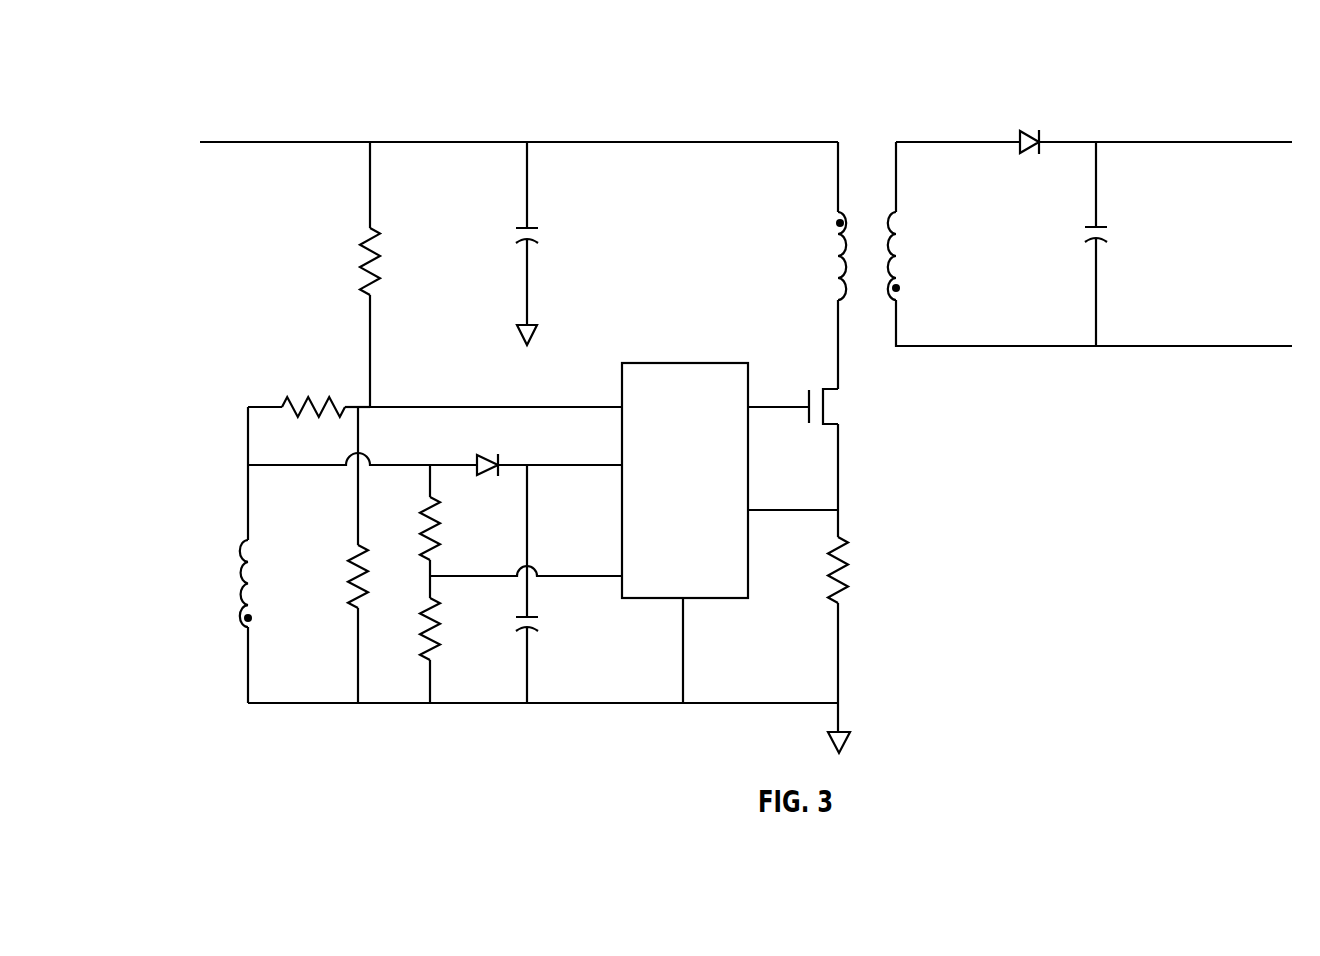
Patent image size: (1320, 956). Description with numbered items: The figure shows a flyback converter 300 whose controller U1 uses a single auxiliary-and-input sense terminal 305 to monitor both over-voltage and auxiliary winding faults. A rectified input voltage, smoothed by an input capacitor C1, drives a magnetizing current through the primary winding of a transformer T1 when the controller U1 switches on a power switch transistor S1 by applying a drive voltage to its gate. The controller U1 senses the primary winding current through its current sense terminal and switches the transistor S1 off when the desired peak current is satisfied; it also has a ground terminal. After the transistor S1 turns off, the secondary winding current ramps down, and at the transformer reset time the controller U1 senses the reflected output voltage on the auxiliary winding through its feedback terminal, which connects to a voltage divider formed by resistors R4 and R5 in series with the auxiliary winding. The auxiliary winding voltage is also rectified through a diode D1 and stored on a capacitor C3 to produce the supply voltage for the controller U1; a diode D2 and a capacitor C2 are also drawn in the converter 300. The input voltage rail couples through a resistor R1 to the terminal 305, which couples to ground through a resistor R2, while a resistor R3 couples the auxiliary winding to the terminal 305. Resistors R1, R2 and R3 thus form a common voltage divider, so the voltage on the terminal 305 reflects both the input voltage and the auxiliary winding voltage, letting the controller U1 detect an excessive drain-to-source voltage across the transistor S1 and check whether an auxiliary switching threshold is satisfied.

The flyback converter 300 is at (314, 52).
The terminal 305 is at (392, 406).
The resistor R1 is at (347, 274).
The resistor R2 is at (338, 555).
The resistor R3 is at (309, 385).
The resistor R4 is at (455, 531).
The resistor R5 is at (859, 570).
The input capacitor C1 is at (509, 243).
The capacitor C2 is at (1119, 244).
The capacitor C3 is at (509, 584).
The diode D1 is at (1033, 119).
The diode D2 is at (492, 443).
The transformer T1 is at (868, 221).
The power switch transistor S1 is at (849, 408).
The controller U1 is at (685, 480).